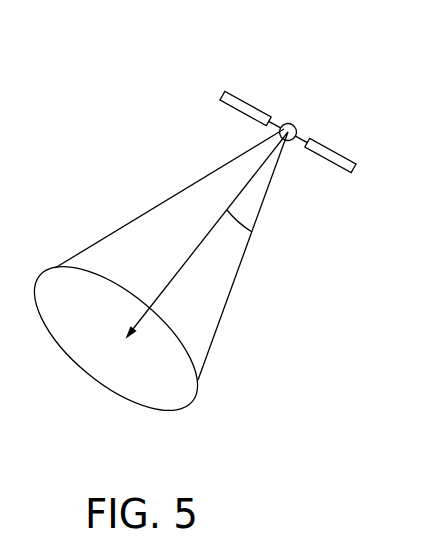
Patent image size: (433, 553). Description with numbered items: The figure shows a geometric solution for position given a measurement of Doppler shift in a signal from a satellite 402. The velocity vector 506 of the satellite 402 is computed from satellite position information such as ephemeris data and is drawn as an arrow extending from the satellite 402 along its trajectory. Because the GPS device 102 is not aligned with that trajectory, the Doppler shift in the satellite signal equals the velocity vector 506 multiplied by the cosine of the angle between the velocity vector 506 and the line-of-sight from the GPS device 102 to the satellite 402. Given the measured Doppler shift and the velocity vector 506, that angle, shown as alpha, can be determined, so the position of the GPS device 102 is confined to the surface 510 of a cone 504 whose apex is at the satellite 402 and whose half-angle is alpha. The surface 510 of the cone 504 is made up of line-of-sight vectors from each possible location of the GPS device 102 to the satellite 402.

The satellite 402 is at (292, 121).
The cone 504 is at (162, 225).
The velocity vector 506 is at (185, 260).
The surface of the cone 510 is at (248, 247).
The GPS device 102 is at (192, 402).